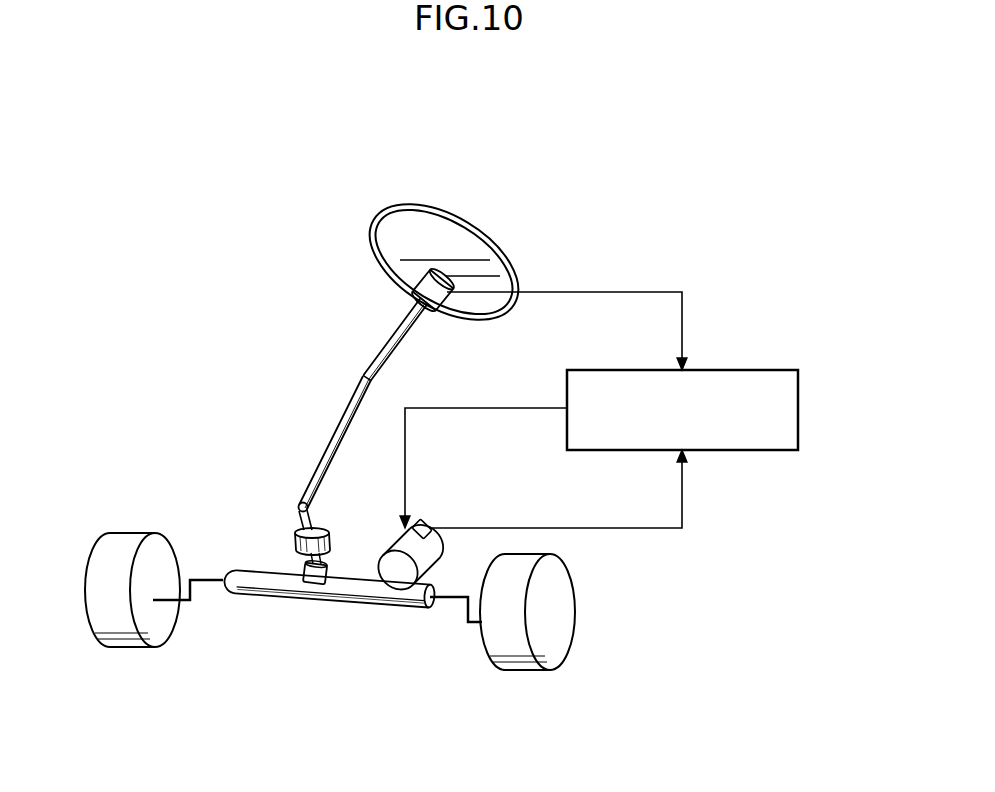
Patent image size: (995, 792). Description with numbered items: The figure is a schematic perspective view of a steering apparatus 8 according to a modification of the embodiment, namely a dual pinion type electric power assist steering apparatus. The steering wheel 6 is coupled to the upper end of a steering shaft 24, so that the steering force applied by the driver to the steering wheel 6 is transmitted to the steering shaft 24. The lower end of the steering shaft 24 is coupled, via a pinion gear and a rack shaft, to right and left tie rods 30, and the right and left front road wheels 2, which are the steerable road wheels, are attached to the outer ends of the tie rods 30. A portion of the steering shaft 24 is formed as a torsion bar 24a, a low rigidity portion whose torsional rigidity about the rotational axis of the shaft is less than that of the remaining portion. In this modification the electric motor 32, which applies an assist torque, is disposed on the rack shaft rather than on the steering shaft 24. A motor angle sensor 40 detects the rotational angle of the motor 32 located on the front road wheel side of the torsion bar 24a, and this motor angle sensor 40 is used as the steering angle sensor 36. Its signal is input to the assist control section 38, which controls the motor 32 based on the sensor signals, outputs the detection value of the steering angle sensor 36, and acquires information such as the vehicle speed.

The steering apparatus 8 is at (648, 134).
The steering wheel 6 is at (475, 238).
The steering shaft 24 is at (383, 353).
The torsion bar 24a is at (292, 531).
The steering angle sensor 36 is at (292, 541).
The electric motor 32 is at (398, 550).
The motor angle sensor 40 is at (420, 527).
The tie rods 30 is at (450, 597).
The front road wheels 2 is at (115, 640).
The assist control section 38 is at (743, 370).